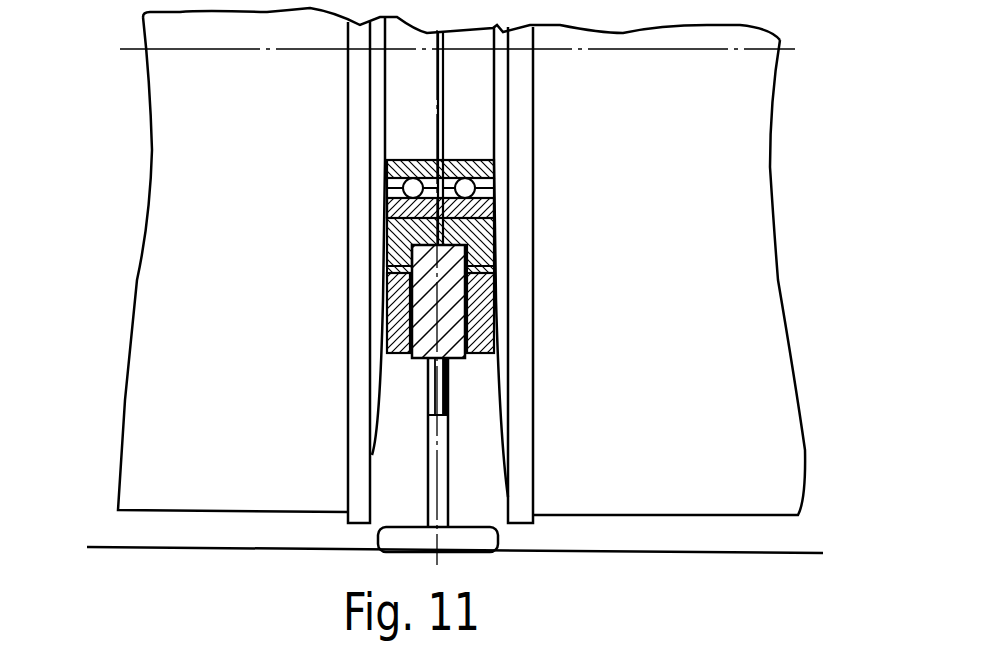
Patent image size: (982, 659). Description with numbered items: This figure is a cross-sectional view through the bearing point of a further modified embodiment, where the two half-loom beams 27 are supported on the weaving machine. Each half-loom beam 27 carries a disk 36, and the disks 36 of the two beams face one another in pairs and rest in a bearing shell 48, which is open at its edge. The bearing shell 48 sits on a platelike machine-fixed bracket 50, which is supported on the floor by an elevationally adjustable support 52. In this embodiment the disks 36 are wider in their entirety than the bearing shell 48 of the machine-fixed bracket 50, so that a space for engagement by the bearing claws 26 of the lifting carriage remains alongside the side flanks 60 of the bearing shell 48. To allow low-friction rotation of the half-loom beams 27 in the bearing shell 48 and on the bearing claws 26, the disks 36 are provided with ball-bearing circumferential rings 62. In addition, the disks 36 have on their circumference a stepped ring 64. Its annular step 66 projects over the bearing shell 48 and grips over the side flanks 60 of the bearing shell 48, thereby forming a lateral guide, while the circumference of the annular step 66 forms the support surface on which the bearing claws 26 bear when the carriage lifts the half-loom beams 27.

The half-loom beam 27 is at (152, 158).
The disk 36 is at (402, 97).
The ball-bearing circumferential ring 62 is at (387, 168).
The bearing shell 48 is at (387, 193).
The stepped ring 64 is at (387, 221).
The side flank 60 is at (387, 240).
The annular step 66 is at (387, 268).
The bearing claw 26 is at (397, 293).
The machine-fixed bracket 50 is at (430, 315).
The elevationally adjustable support 52 is at (437, 455).